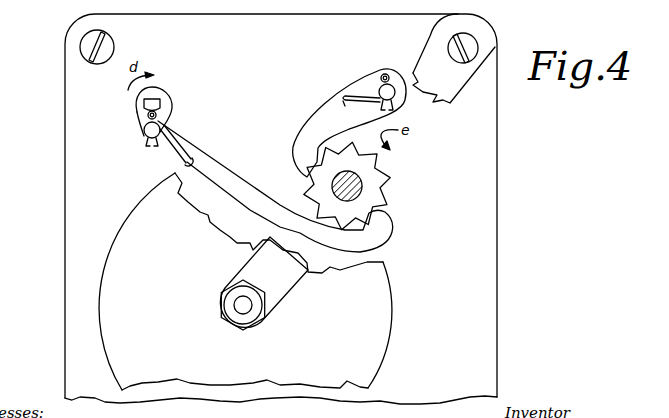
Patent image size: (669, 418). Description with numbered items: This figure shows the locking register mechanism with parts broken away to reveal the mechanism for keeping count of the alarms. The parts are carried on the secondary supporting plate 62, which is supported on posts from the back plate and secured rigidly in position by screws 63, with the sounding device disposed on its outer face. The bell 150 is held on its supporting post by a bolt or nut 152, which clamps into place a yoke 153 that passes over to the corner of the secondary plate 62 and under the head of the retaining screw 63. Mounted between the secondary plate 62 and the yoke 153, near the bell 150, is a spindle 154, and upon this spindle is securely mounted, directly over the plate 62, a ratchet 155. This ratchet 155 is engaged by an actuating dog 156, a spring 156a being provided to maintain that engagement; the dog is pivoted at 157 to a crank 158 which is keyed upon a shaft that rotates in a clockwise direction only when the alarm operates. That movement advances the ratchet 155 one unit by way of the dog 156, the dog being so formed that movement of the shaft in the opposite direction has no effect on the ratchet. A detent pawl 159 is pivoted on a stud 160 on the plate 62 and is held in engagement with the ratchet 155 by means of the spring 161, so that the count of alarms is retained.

The secondary supporting plate 62 is at (462, 276).
The screws 63 is at (82, 49).
The bell 150 is at (118, 282).
The bolt or nut 152 is at (238, 306).
The yoke 153 is at (277, 285).
The spindle 154 is at (363, 190).
The ratchet 155 is at (368, 168).
The actuating dog 156 is at (255, 203).
The spring 156a is at (186, 152).
The pivot 157 is at (143, 141).
The crank 158 is at (164, 114).
The detent pawl 159 is at (333, 127).
The stud 160 is at (387, 84).
The spring 161 is at (357, 92).